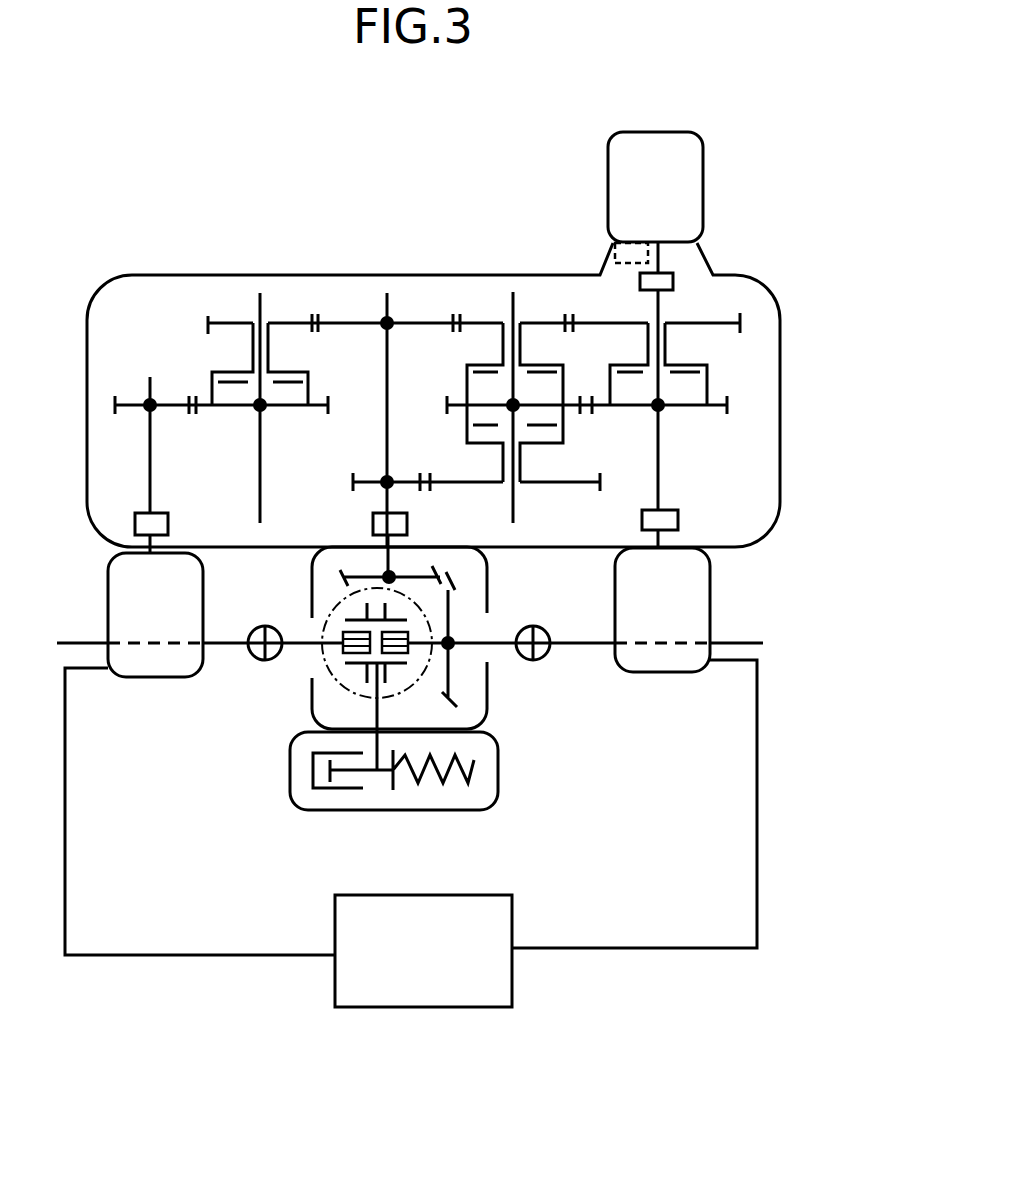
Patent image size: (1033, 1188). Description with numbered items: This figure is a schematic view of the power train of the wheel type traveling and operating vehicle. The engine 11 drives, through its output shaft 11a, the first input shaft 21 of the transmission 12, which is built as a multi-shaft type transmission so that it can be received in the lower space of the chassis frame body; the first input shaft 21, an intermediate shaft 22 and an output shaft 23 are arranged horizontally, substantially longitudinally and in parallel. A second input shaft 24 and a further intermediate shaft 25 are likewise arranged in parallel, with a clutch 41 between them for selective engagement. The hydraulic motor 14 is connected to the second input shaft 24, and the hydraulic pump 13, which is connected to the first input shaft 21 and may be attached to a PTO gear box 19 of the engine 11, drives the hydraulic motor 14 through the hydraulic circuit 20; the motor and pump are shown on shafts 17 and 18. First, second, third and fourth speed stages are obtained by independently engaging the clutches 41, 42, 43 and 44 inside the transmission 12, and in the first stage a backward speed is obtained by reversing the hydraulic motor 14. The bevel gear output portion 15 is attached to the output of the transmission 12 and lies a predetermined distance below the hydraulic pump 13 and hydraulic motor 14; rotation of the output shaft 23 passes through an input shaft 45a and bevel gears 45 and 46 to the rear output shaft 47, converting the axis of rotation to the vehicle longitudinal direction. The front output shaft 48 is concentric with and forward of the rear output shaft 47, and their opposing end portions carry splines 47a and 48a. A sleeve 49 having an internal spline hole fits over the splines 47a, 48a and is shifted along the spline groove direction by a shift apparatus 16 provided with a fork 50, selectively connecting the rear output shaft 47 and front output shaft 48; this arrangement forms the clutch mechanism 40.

The engine 11 is at (703, 172).
The output shaft of the engine 11a is at (661, 258).
The transmission 12 is at (150, 244).
The hydraulic pump 13 is at (712, 577).
The hydraulic motor 14 is at (108, 583).
The bevel gear output portion 15 is at (492, 710).
The shift apparatus 16 is at (498, 785).
The hydraulic motor shaft 17 is at (85, 643).
The hydraulic pump shaft 18 is at (740, 640).
The PTO gear box 19 is at (617, 247).
The hydraulic circuit 20 is at (512, 993).
The first input shaft 21 is at (612, 290).
The intermediate shaft 22 is at (509, 295).
The output shaft 23 is at (387, 293).
The second input shaft 24 is at (150, 460).
The intermediate shaft 25 is at (260, 293).
The clutch mechanism 40 is at (292, 700).
The clutch 41 is at (200, 372).
The clutch 42 is at (455, 371).
The clutch 43 is at (720, 366).
The clutch 44 is at (455, 428).
The bevel gear 45 is at (355, 573).
The input shaft 45a is at (405, 560).
The bevel gear 46 is at (455, 598).
The rear output shaft 47 is at (498, 640).
The spline 47a is at (413, 647).
The front output shaft 48 is at (298, 641).
The spline 48a is at (333, 655).
The sleeve 49 is at (465, 728).
The fork 50 is at (335, 712).